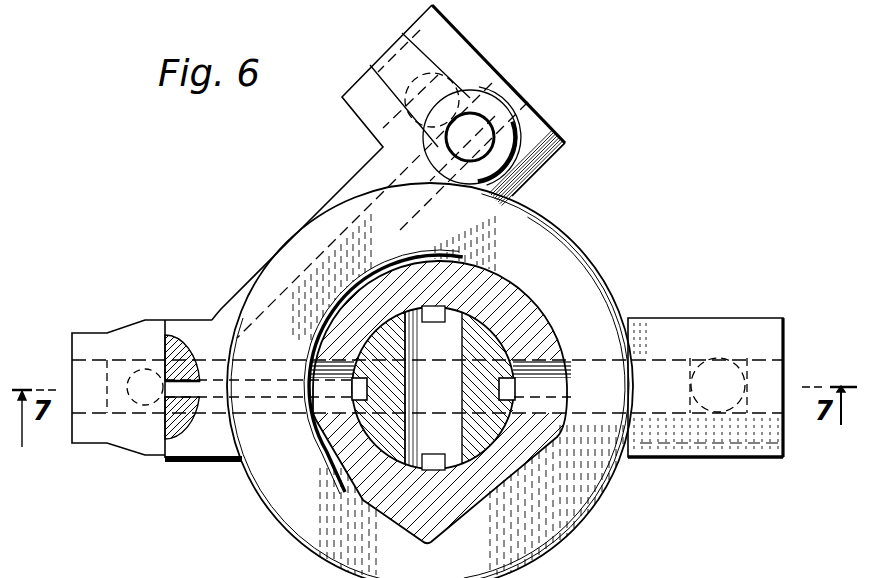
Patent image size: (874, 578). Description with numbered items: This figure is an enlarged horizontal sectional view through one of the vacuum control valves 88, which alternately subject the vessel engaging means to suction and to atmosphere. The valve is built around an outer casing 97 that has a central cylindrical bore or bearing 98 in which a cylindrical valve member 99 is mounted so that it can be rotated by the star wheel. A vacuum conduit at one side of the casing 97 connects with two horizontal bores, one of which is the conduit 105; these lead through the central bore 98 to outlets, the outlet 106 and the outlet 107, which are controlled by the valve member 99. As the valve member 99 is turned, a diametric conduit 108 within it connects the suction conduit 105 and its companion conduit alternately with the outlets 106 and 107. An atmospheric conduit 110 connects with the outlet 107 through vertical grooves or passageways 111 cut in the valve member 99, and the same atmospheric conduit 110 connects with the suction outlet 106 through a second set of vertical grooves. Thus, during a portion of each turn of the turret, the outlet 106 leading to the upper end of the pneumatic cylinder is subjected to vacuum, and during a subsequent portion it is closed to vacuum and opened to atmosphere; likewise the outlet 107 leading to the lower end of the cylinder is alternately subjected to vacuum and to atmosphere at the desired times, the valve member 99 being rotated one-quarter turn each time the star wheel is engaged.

The vacuum control valve 88 is at (669, 263).
The outer casing 97 is at (594, 299).
The cylindrical bore or bearing 98 is at (462, 262).
The cylindrical valve member 99 is at (482, 332).
The horizontal bore or conduit 105 is at (688, 357).
The outlet 106 is at (140, 402).
The outlet 107 is at (357, 173).
The diametric conduit 108 is at (380, 416).
The atmospheric conduit 110 is at (197, 424).
The vertical grooves or passageways 111 is at (516, 390).